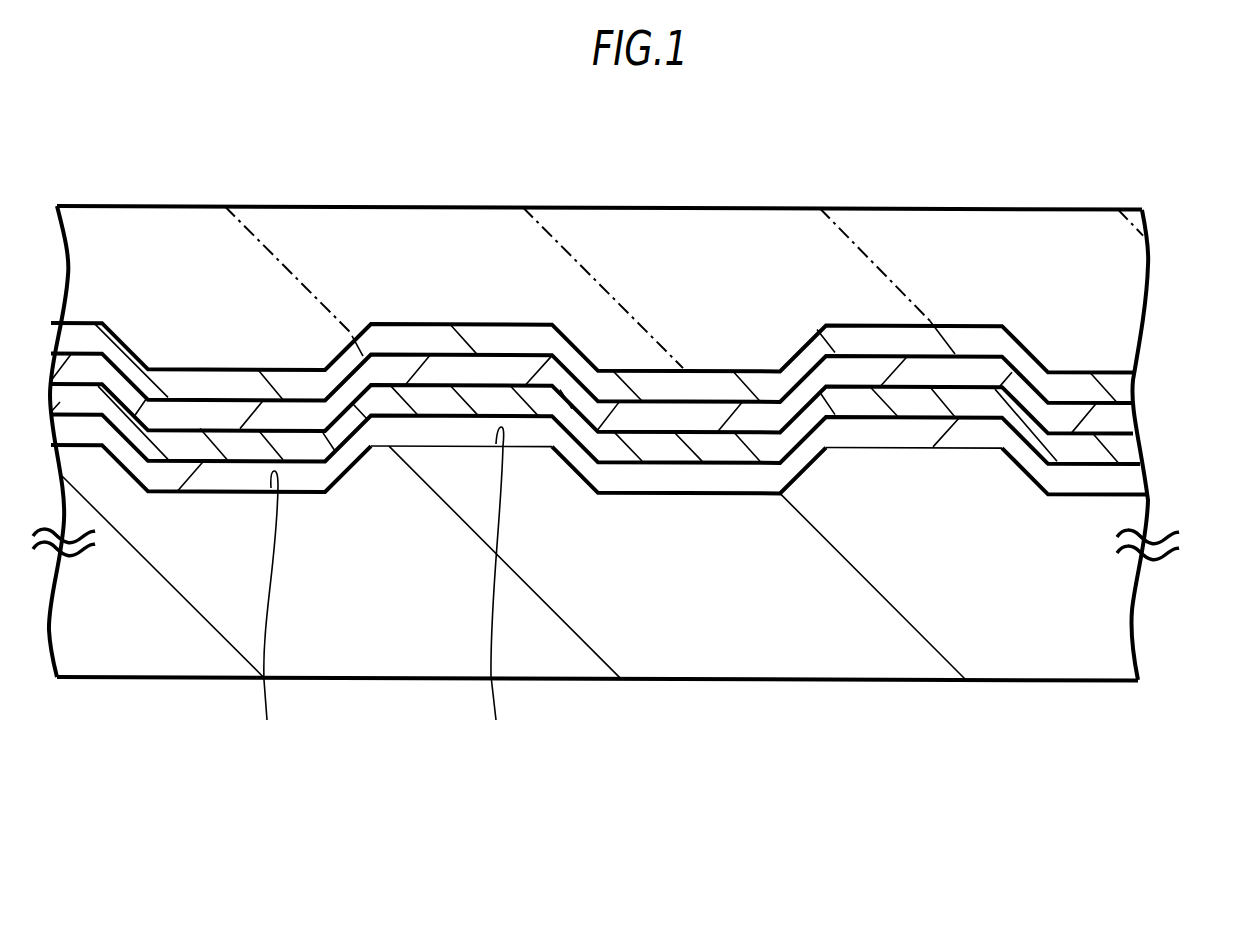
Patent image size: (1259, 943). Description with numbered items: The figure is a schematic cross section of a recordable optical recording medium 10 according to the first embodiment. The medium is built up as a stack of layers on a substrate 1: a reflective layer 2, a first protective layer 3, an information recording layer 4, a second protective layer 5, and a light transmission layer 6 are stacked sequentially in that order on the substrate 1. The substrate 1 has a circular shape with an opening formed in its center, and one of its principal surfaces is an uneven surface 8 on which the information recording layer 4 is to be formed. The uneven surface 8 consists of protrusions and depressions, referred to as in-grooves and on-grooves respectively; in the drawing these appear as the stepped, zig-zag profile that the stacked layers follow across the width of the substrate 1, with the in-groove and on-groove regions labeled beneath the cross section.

The recordable optical recording medium 10 is at (840, 158).
The substrate 1 is at (1117, 613).
The reflective layer 2 is at (1127, 477).
The first protective layer 3 is at (1127, 447).
The information recording layer 4 is at (1127, 418).
The second protective layer 5 is at (1127, 388).
The light transmission layer 6 is at (1127, 305).
The uneven surface 8 is at (555, 768).